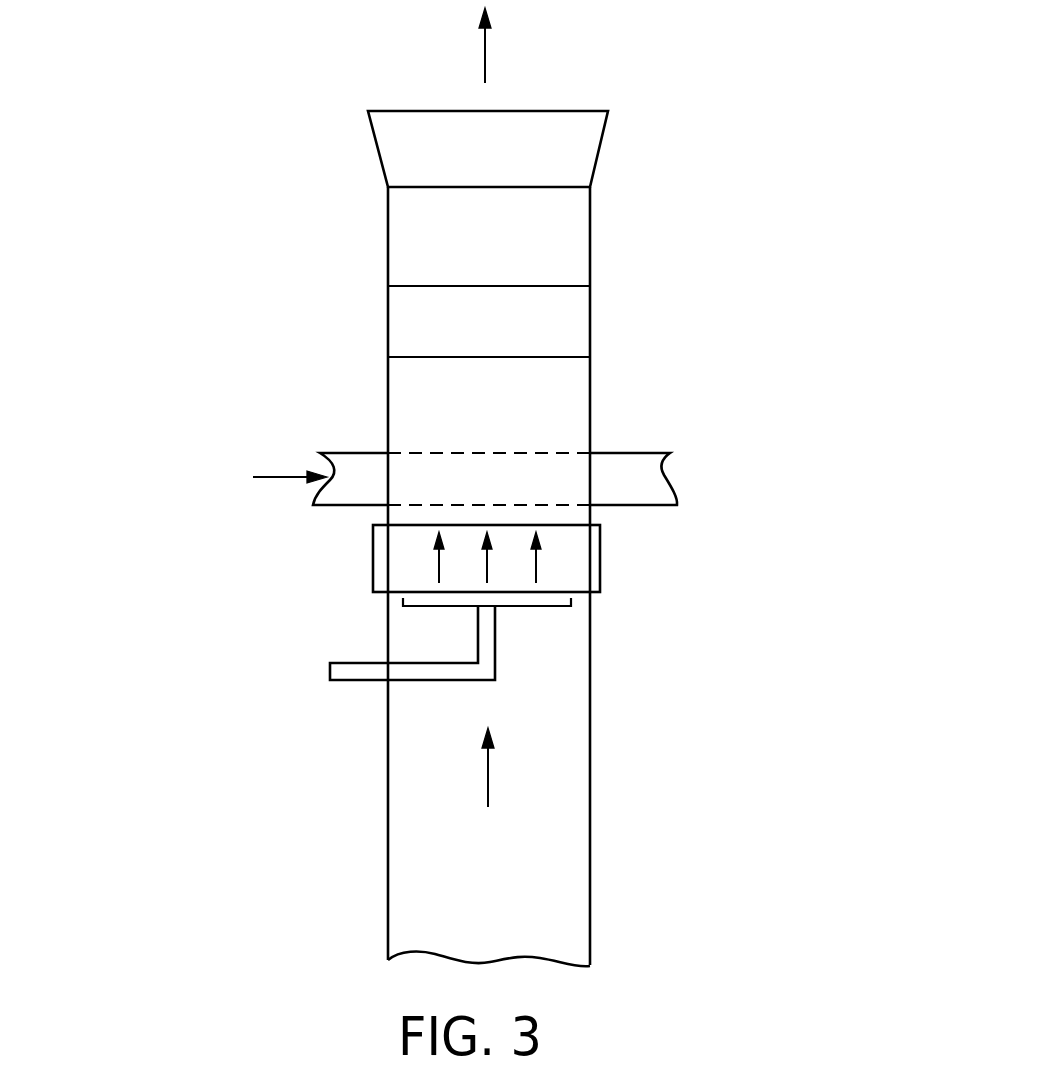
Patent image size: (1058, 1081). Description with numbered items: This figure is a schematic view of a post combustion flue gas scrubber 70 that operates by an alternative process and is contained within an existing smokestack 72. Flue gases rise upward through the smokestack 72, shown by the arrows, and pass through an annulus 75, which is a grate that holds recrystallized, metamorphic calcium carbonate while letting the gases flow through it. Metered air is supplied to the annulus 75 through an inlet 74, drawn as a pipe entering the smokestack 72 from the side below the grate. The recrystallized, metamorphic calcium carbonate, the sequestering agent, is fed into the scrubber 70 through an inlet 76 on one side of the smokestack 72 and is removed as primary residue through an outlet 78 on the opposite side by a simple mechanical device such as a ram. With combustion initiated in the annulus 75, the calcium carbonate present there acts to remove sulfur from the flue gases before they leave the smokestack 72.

The post combustion scrubber 70 is at (268, 502).
The smokestack 72 is at (582, 323).
The inlet 74 is at (363, 678).
The annulus 75 is at (562, 575).
The inlet 76 is at (316, 492).
The outlet 78 is at (667, 470).